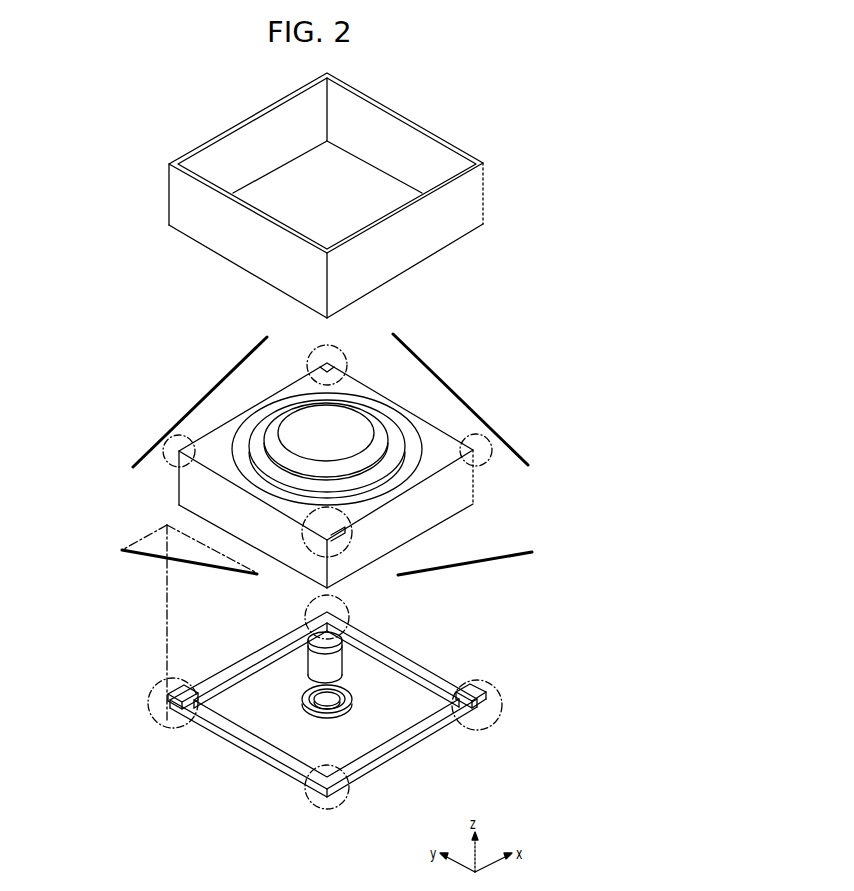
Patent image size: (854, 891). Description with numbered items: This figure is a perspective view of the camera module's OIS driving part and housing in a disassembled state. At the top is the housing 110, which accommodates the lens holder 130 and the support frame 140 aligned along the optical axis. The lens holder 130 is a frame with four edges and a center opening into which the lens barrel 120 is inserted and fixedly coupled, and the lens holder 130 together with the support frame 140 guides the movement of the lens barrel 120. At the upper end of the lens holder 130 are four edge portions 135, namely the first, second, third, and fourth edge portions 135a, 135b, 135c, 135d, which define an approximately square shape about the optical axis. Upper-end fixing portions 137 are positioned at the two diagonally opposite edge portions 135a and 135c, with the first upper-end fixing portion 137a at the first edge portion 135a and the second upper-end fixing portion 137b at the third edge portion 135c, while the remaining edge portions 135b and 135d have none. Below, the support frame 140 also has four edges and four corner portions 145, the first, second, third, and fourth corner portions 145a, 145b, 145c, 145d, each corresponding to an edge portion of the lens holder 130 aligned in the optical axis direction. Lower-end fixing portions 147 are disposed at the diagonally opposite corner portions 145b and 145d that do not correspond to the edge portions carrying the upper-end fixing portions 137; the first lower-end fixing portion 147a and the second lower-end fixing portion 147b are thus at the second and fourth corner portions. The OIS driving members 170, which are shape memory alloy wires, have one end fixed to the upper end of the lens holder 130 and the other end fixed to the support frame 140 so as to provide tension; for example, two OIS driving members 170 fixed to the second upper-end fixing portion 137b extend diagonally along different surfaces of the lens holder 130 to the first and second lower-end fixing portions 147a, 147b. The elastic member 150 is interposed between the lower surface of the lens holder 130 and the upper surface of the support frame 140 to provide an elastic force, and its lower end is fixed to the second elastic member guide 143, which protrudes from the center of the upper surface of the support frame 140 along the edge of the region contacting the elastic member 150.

The housing 110 is at (487, 194).
The lens barrel 120 is at (393, 443).
The lens holder 130 is at (443, 521).
The edge portions 135 is at (70, 245).
The first edge portion 135a is at (339, 350).
The second edge portion 135b is at (480, 463).
The third edge portion 135c is at (310, 556).
The fourth edge portion 135d is at (172, 465).
The upper-end fixing portions 137 is at (70, 355).
The first upper-end fixing portion 137a is at (323, 364).
The second upper-end fixing portion 137b is at (334, 538).
The support frame 140 is at (460, 726).
The second elastic member guide 143 is at (343, 716).
The corner portions 145 is at (70, 565).
The first corner portion 145a is at (345, 610).
The second corner portion 145b is at (499, 712).
The third corner portion 145c is at (310, 808).
The fourth corner portion 145d is at (165, 726).
The lower-end fixing portions 147 is at (70, 678).
The first lower-end fixing portion 147a is at (488, 693).
The second lower-end fixing portion 147b is at (172, 705).
The elastic member 150 is at (344, 653).
The OIS driving members 170 is at (163, 438).